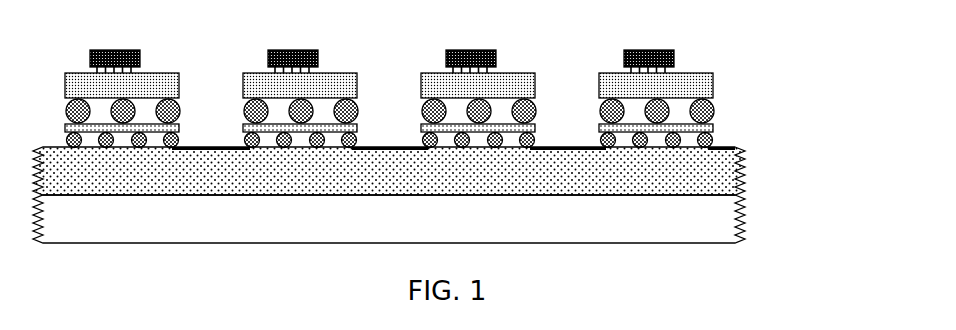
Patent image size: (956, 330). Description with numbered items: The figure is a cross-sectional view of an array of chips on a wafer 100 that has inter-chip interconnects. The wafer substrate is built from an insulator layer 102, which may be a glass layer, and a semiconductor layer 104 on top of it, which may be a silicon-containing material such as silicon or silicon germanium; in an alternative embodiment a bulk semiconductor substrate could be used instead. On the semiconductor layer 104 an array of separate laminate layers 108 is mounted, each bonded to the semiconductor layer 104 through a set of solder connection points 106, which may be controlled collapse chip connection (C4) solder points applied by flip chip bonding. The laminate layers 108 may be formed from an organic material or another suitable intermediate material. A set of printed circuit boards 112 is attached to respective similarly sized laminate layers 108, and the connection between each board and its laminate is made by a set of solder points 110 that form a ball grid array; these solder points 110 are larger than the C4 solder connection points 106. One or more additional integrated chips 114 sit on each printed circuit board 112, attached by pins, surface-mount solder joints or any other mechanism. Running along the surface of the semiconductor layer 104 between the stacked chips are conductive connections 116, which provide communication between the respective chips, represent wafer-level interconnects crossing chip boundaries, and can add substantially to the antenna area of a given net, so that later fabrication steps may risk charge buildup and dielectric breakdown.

The wafer 100 is at (83, 43).
The insulator layer 102 is at (741, 222).
The semiconductor layer 104 is at (741, 172).
The solder connection points 106 is at (714, 130).
The laminate layers 108 is at (421, 127).
The solder points 110 is at (714, 110).
The printed circuit boards 112 is at (714, 83).
The integrated chips 114 is at (674, 53).
The conductive connections 116 is at (567, 147).